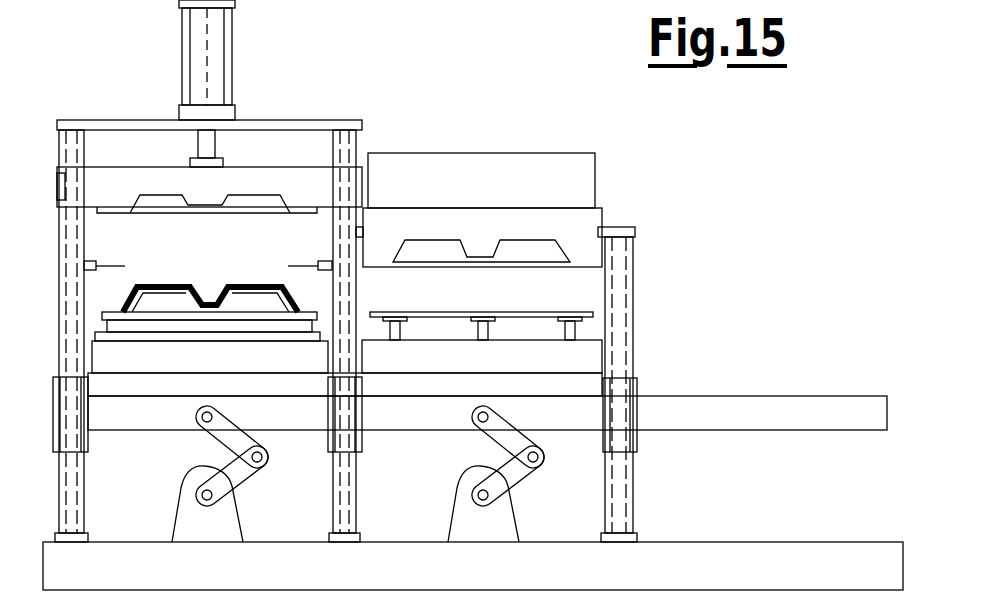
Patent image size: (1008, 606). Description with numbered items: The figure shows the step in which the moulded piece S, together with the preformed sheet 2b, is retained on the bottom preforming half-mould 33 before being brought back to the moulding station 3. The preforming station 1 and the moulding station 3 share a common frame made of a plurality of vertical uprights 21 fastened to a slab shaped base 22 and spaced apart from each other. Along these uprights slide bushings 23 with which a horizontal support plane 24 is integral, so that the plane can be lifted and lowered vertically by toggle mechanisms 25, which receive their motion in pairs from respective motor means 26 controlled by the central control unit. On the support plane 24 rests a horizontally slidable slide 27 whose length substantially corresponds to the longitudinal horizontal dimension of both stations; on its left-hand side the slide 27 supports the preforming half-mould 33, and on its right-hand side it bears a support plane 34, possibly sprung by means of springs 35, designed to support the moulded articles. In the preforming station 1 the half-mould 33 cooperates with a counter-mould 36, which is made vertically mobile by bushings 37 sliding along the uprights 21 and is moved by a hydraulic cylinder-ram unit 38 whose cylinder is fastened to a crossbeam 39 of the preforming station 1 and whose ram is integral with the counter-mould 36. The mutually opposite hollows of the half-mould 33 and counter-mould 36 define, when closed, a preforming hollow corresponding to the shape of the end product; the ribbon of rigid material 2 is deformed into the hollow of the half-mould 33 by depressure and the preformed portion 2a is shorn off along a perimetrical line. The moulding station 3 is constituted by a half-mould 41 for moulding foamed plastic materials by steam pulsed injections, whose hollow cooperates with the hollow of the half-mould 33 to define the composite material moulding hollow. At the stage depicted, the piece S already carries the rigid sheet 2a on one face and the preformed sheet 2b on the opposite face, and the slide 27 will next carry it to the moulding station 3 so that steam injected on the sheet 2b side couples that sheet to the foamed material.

The preforming station 1 is at (86, 104).
The rigid material 2 is at (117, 266).
The preformed portion 2a is at (173, 287).
The preformed sheet 2b is at (255, 287).
The moulded piece S is at (214, 302).
The moulding station 3 is at (620, 216).
The vertical uprights 21 is at (630, 517).
The slab shaped base 22 is at (797, 558).
The bushings 23 is at (625, 432).
The horizontal support plane 24 is at (826, 406).
The toggle mechanisms 25 is at (268, 456).
The motor means 26 is at (228, 505).
The slide 27 is at (128, 388).
The preforming half-mould 33 is at (115, 325).
The support plane 34 is at (592, 318).
The springs 35 is at (398, 326).
The counter-mould 36 is at (150, 182).
The bushings 37 is at (60, 190).
The cylinder-ram unit 38 is at (234, 26).
The crossbeam 39 is at (310, 126).
The half-mould 41 is at (530, 218).